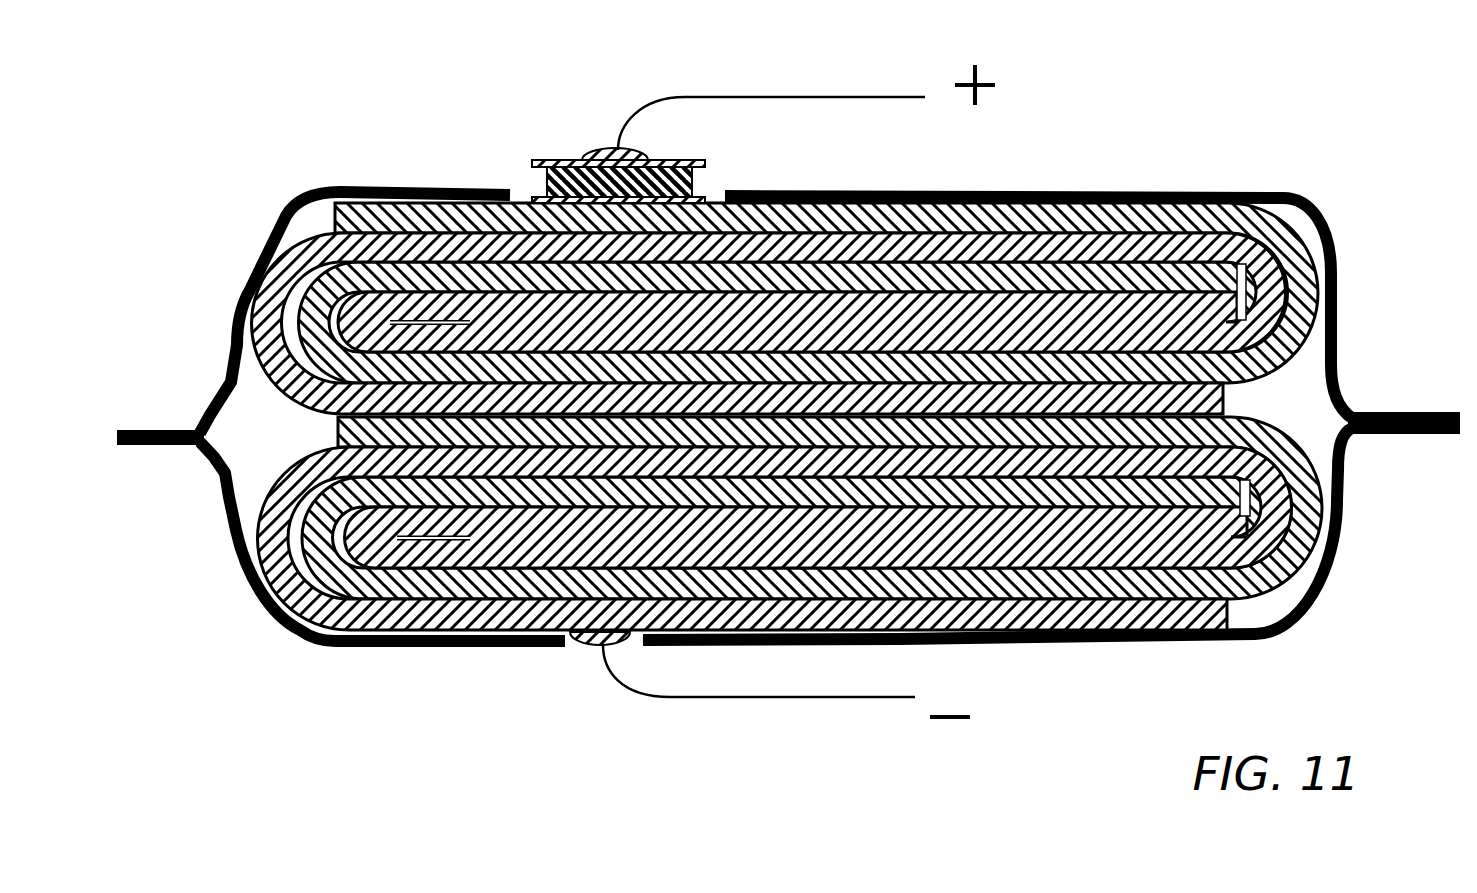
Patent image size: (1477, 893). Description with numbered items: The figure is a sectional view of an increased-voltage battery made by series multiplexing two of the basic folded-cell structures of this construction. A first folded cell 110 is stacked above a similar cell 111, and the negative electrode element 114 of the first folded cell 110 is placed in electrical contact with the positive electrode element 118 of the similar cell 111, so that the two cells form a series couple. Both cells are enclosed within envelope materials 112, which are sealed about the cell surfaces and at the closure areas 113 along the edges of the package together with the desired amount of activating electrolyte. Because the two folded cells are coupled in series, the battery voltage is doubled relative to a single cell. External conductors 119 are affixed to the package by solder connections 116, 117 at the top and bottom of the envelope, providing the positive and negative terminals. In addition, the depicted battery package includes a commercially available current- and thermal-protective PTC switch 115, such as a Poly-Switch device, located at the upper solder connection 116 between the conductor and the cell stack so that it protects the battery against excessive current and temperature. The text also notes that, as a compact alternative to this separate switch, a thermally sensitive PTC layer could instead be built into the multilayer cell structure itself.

The first folded cell 110 is at (794, 404).
The similar cell 111 is at (824, 422).
The envelope materials 112 is at (1105, 193).
The closure areas 113 is at (137, 428).
The negative electrode element 114 is at (296, 410).
The PTC switch 115 is at (535, 183).
The solder connection 116 is at (598, 151).
The solder connection 117 is at (577, 647).
The positive electrode element 118 is at (1282, 447).
The conductors 119 is at (742, 97).